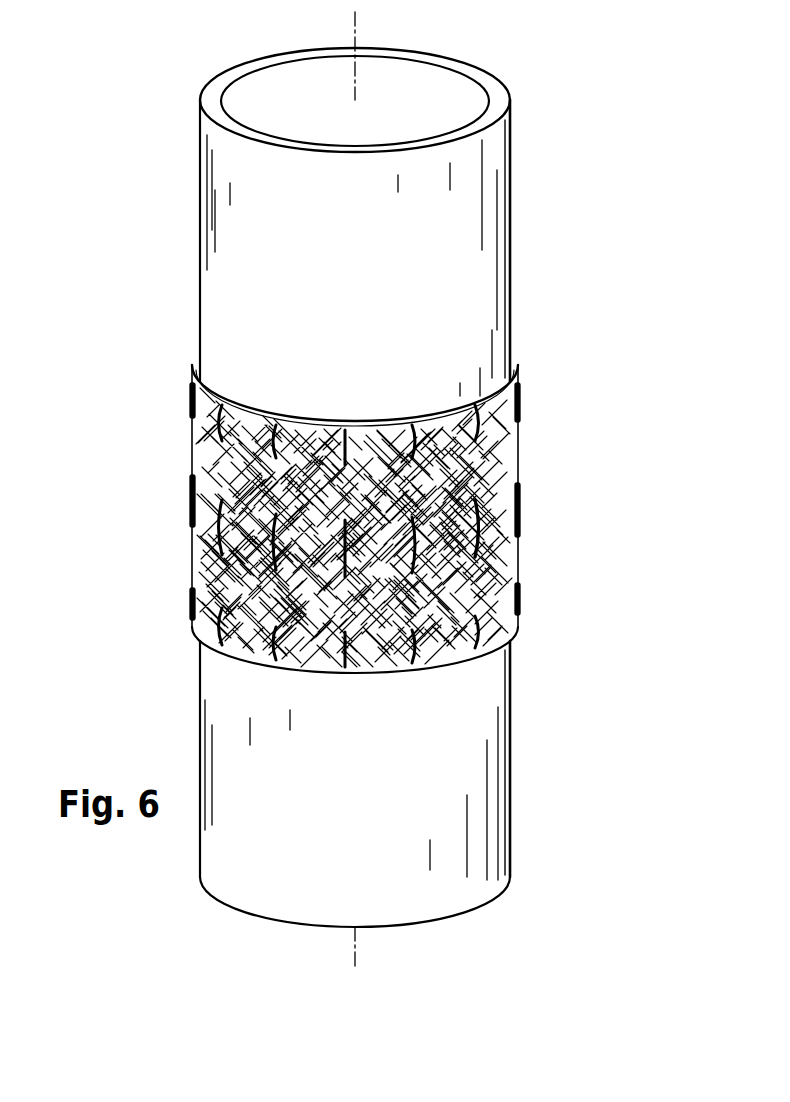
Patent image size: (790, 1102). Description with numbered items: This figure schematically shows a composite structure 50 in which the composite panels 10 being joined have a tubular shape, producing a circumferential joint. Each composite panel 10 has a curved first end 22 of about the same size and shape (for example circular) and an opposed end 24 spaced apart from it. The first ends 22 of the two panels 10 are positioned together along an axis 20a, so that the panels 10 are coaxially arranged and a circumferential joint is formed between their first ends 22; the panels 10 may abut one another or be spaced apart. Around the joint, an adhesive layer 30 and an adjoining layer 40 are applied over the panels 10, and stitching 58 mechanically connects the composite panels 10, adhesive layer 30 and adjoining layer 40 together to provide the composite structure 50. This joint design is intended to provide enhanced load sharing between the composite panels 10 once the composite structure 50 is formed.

The composite panel 10 is at (528, 273).
The axis 20a is at (357, 18).
The first end 22 is at (497, 440).
The opposed end 24 is at (478, 138).
The adhesive layer 30 is at (200, 573).
The adjoining layer 40 is at (200, 443).
The composite structure 50 is at (164, 490).
The stitching 58 is at (480, 552).